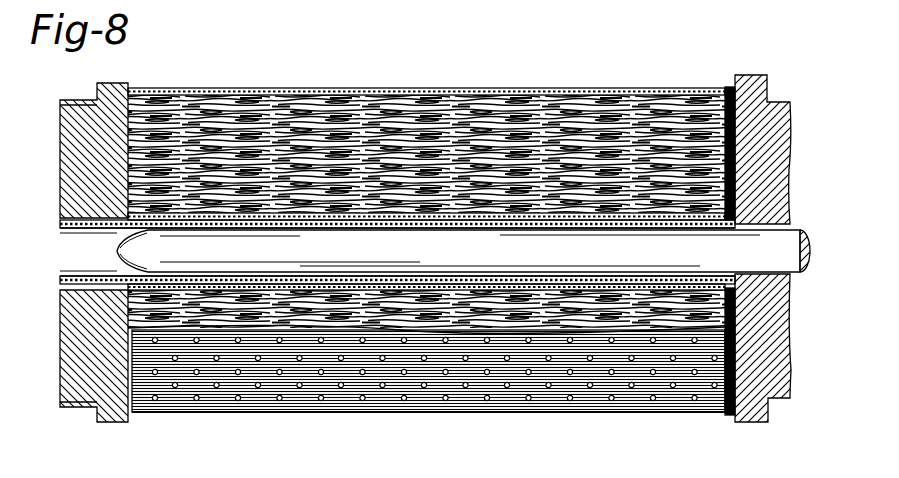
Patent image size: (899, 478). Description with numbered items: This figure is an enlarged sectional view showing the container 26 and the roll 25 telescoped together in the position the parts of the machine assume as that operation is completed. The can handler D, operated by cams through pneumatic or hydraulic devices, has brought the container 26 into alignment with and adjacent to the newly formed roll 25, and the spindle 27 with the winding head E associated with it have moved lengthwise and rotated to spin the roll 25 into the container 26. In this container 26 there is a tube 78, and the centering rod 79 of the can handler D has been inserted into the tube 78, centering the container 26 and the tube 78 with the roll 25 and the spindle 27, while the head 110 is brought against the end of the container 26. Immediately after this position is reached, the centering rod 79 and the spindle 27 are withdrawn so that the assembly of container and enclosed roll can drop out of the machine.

The roll 25 is at (425, 108).
The container 26 is at (397, 414).
The spindle 27 is at (60, 279).
The tube 78 is at (60, 238).
The centering rod 79 is at (790, 233).
The head 110 is at (783, 100).
The winding head E is at (121, 83).
The can handler D is at (748, 420).